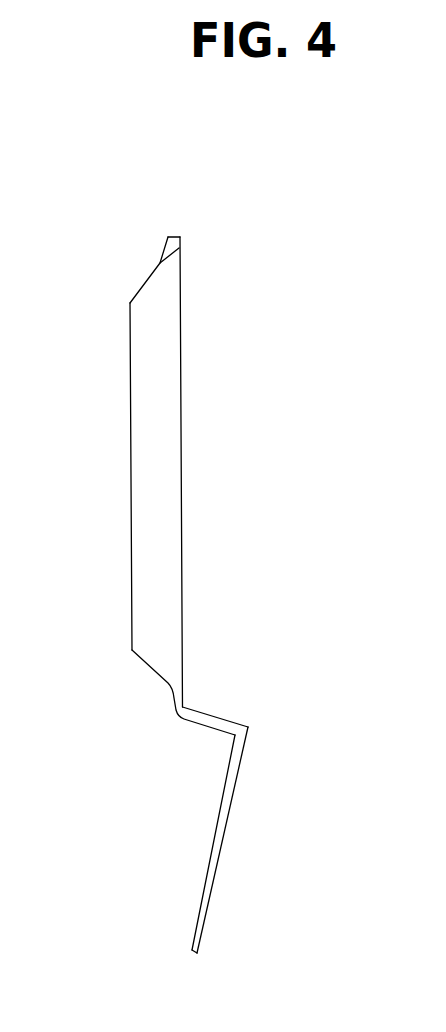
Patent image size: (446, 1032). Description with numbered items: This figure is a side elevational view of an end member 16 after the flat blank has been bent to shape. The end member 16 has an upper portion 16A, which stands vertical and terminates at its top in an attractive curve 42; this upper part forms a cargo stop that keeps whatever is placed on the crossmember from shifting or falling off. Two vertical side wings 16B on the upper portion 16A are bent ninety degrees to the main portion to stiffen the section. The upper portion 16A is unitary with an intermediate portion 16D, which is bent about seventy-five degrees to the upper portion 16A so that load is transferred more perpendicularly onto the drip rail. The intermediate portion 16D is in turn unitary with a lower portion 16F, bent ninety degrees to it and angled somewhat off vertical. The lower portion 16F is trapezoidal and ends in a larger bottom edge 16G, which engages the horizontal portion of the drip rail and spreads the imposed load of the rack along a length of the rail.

The end member 16 is at (117, 520).
The upper portion 16A is at (178, 248).
The side wing 16B is at (160, 455).
The intermediate portion 16D is at (213, 717).
The lower portion 16F is at (222, 809).
The bottom edge 16G is at (192, 953).
The curve 42 is at (172, 237).